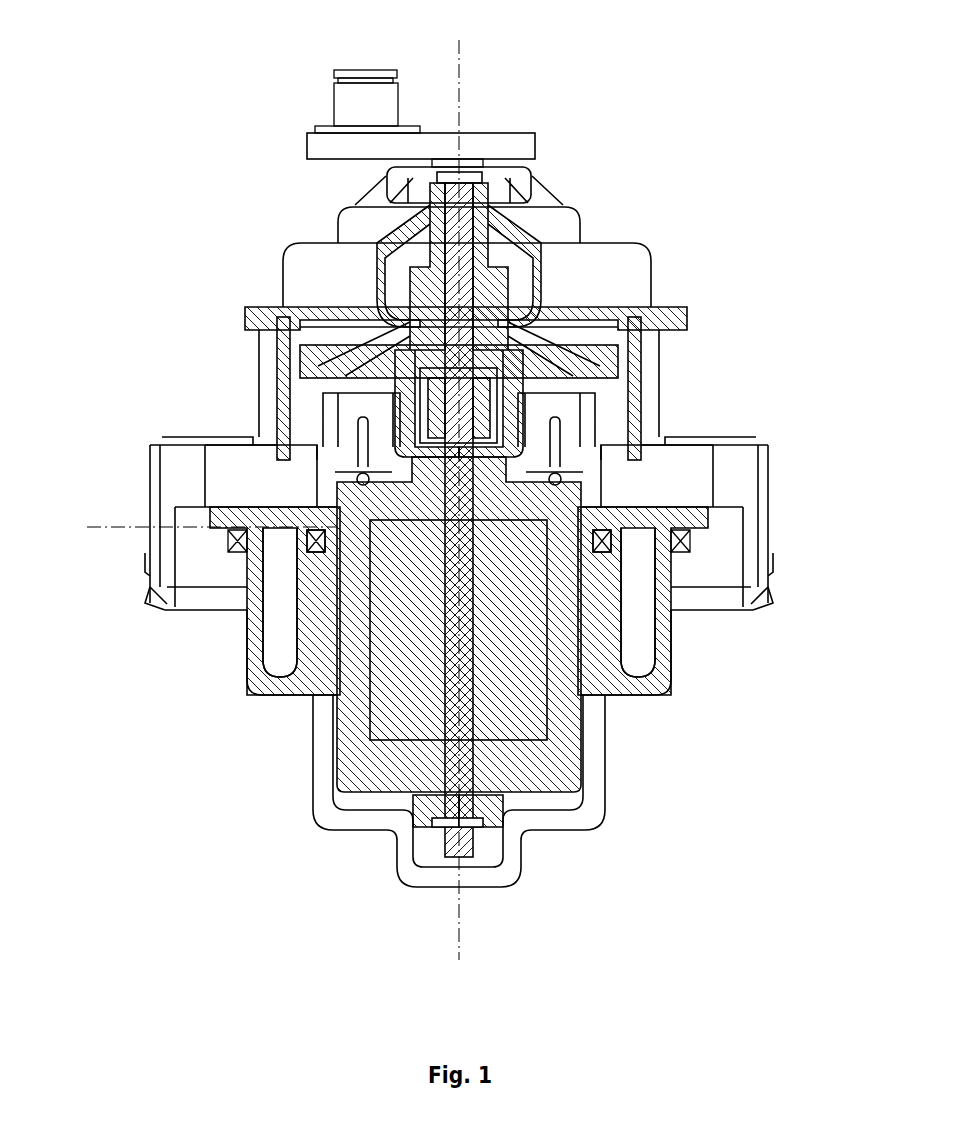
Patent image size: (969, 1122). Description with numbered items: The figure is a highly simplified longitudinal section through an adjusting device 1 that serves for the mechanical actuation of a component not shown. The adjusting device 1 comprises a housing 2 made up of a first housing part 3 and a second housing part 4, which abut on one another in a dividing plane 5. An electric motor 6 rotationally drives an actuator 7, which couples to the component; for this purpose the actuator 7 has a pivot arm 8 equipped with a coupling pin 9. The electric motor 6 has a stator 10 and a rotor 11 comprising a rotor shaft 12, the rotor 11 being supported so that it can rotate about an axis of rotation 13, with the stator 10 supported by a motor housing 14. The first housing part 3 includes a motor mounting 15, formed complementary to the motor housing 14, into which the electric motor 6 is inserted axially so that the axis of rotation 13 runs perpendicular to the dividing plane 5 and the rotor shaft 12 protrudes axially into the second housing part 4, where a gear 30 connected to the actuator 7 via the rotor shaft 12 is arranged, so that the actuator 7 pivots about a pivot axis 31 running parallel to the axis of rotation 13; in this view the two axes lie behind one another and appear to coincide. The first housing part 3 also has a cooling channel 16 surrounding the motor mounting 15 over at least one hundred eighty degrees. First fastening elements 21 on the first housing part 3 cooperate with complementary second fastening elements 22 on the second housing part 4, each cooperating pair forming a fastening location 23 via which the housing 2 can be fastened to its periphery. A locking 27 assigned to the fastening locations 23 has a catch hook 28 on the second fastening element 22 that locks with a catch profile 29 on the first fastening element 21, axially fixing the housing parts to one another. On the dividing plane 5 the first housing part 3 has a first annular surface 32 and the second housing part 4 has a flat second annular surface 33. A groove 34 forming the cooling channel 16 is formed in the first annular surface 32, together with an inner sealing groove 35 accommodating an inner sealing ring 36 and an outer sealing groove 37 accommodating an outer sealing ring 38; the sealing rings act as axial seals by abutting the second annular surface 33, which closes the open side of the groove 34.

The adjusting device 1 is at (757, 168).
The housing 2 is at (703, 340).
The first housing part 3 is at (606, 756).
The second housing part 4 is at (646, 376).
The dividing plane 5 is at (93, 524).
The electric motor 6 is at (584, 718).
The actuator 7 is at (514, 128).
The pivot arm 8 is at (312, 145).
The coupling pin 9 is at (372, 90).
The stator 10 is at (367, 760).
The rotor 11 is at (390, 717).
The rotor shaft 12 is at (453, 412).
The axis of rotation 13 is at (460, 930).
The motor housing 14 is at (357, 795).
The motor mounting 15 is at (583, 762).
The cooling channel 16 is at (268, 680).
The first fastening elements 21 is at (188, 578).
The second fastening elements 22 is at (222, 442).
The fastening location 23 is at (138, 455).
The locking 27 is at (138, 598).
The catch hook 28 is at (152, 606).
The catch profile 29 is at (148, 562).
The gear 30 is at (550, 343).
The pivot axis 31 is at (455, 95).
The first annular surface 32 is at (290, 532).
The second annular surface 33 is at (235, 550).
The groove 34 is at (273, 612).
The inner sealing groove 35 is at (640, 590).
The inner sealing ring 36 is at (622, 532).
The outer sealing groove 37 is at (695, 553).
The outer sealing ring 38 is at (693, 537).